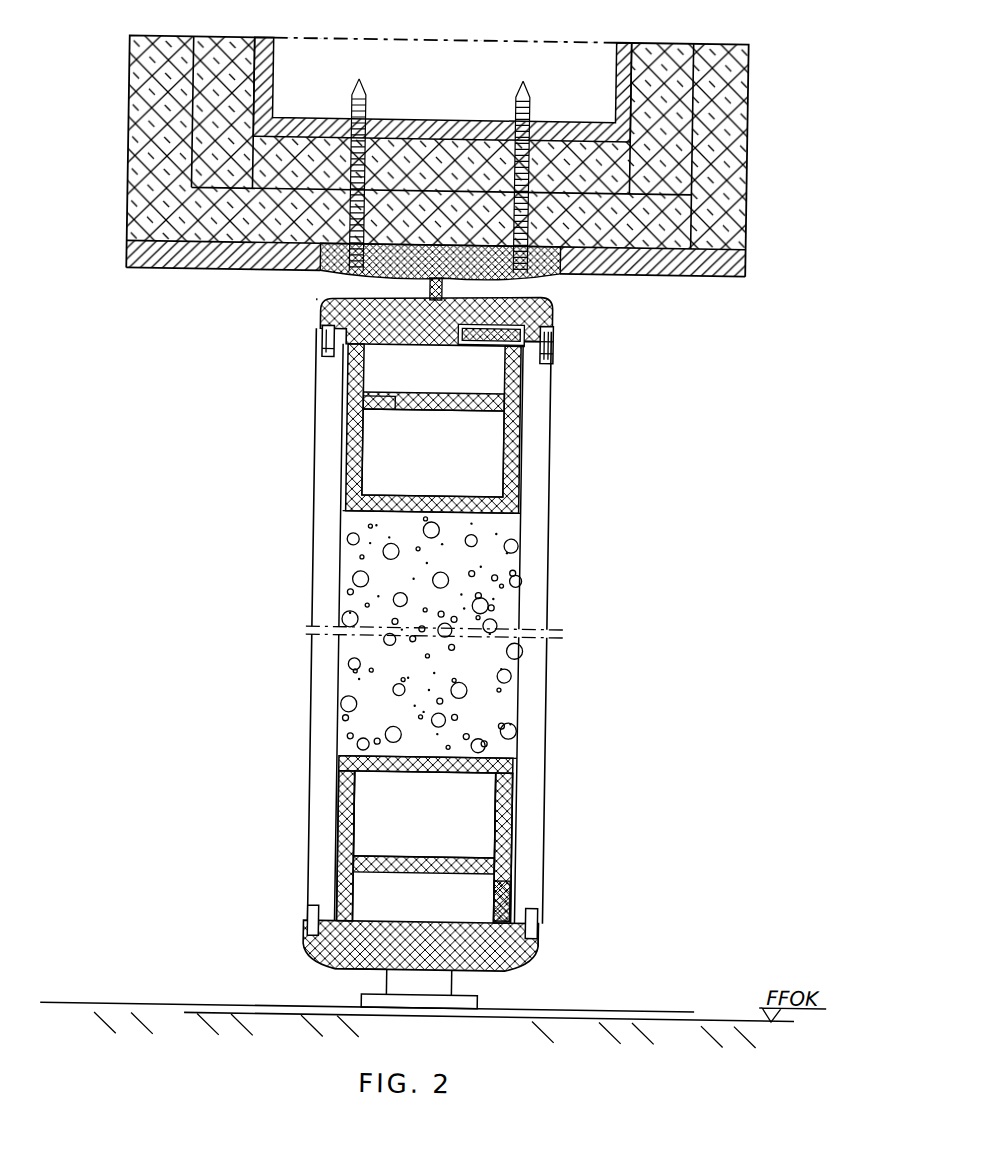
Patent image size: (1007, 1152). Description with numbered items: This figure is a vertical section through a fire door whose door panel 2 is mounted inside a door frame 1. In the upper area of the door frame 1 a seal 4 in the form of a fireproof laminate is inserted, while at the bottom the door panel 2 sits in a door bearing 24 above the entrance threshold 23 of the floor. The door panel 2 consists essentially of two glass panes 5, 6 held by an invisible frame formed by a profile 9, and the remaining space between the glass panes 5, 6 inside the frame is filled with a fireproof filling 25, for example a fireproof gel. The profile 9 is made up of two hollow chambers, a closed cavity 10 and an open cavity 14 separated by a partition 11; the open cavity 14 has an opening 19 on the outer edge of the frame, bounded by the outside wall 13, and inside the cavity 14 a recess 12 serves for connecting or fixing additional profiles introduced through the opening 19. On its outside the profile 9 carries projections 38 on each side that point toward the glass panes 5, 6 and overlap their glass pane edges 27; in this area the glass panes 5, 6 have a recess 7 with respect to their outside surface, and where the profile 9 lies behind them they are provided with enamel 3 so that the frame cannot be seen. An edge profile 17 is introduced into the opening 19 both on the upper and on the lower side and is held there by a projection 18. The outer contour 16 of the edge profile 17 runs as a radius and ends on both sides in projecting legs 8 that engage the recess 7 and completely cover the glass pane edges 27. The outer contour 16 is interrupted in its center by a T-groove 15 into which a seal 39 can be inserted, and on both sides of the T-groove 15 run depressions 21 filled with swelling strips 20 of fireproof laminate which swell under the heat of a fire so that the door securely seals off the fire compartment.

The door frame 1 is at (569, 234).
The door panel 2 is at (270, 587).
The enamel 3 is at (336, 841).
The seal 4 is at (555, 281).
The glass pane 5 is at (329, 563).
The glass pane 6 is at (532, 603).
The recess 7 is at (316, 362).
The leg 8 is at (318, 330).
The profile 9 is at (520, 471).
The cavity 10 is at (453, 483).
The partition 11 is at (519, 419).
The recess 12 is at (359, 411).
The outside wall 13 is at (347, 744).
The cavity 14 is at (369, 887).
The T-groove 15 is at (377, 967).
The outer contour 16 is at (395, 971).
The edge profile 17 is at (315, 314).
The projection 18 is at (549, 342).
The opening 19 is at (340, 926).
The swelling strip 20 is at (458, 970).
The depression 21 is at (420, 284).
The entrance threshold 23 is at (206, 1010).
The door bearing 24 is at (461, 1003).
The fireproof filling 25 is at (482, 724).
The glass pane edges 27 is at (545, 940).
The projection 38 is at (548, 321).
The seal 39 is at (350, 266).